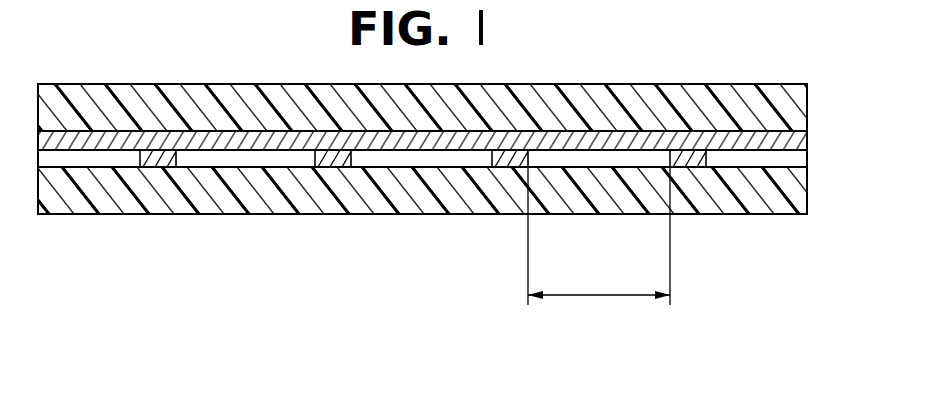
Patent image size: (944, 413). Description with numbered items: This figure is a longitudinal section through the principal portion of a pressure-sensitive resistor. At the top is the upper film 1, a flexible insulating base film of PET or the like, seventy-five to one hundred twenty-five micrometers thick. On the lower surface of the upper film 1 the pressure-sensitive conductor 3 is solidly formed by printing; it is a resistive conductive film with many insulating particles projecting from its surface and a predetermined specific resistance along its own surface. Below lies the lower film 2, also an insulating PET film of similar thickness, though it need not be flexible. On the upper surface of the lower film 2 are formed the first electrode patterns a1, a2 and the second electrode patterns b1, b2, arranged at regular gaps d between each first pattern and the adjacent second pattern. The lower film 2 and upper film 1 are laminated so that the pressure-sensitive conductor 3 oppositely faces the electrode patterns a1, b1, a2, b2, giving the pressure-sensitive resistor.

The upper film 1 is at (797, 105).
The lower film 2 is at (797, 187).
The pressure-sensitive conductor 3 is at (797, 138).
The first electrode pattern a1 is at (160, 153).
The second electrode pattern b1 is at (336, 153).
The first electrode pattern a2 is at (508, 153).
The second electrode pattern b2 is at (690, 153).
The gap d is at (599, 236).